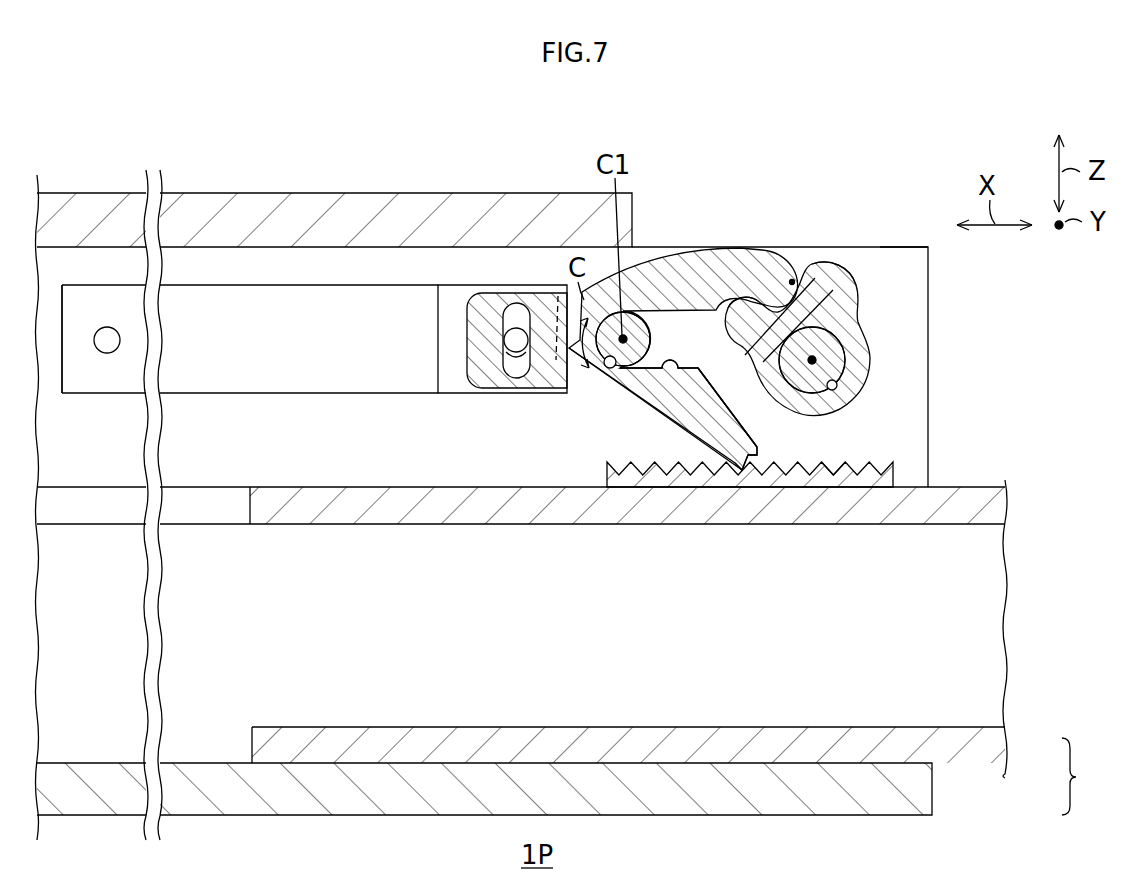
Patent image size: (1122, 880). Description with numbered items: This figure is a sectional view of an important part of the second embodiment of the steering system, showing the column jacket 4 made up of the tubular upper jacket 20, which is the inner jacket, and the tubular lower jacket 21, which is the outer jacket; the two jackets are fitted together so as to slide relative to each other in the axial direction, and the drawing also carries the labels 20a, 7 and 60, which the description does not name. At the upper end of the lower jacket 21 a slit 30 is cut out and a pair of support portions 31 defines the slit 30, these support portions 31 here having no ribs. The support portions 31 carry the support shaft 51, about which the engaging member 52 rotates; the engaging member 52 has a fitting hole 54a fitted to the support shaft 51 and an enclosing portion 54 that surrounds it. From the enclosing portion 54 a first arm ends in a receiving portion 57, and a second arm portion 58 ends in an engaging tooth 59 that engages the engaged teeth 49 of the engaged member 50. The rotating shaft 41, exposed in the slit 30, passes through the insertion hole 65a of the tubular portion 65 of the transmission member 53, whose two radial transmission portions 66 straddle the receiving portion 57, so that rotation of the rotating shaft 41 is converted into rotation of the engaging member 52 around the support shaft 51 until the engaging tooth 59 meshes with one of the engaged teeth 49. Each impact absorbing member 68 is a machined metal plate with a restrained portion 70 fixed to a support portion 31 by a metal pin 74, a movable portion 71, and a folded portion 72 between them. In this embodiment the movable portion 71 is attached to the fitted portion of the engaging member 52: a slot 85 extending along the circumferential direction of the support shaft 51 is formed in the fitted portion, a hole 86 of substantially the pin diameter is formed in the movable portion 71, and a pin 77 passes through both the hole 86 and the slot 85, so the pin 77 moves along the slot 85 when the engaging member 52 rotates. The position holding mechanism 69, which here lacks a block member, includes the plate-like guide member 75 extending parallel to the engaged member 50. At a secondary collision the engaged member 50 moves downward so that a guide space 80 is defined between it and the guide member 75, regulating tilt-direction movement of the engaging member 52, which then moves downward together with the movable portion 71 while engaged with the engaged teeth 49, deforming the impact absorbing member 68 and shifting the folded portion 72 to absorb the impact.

The column jacket 4 is at (567, 616).
The drive unit 7 is at (846, 316).
The upper jacket 20 is at (1003, 752).
The frame rail 20a is at (982, 486).
The lower jacket 21 is at (900, 800).
The slit 30 is at (808, 345).
The support portions 31 is at (900, 258).
The rotating shaft 41 is at (899, 365).
The engaged teeth 49 is at (835, 460).
The engaged member 50 is at (791, 452).
The support shaft 51 is at (648, 318).
The engaging member 52 is at (690, 375).
The transmission member 53 is at (878, 389).
The enclosing portion 54 is at (588, 350).
The fitting hole 54a is at (610, 368).
The receiving portion 57 is at (790, 282).
The second arm portion 58 is at (687, 410).
The engaging tooth 59 is at (742, 470).
The arm block 60 is at (662, 372).
The tubular portion 65 is at (846, 316).
The insertion hole 65a is at (835, 378).
The transmission portions 66 is at (828, 268).
The impact absorbing member 68 is at (240, 300).
The position holding mechanism 69 is at (334, 195).
The restrained portion 70 is at (91, 293).
The movable portion 71 is at (450, 362).
The folded portion 72 is at (556, 360).
The metal pin 74 is at (107, 353).
The guide member 75 is at (352, 207).
The pin 77 is at (512, 337).
The guide space 80 is at (493, 298).
The slot 85 is at (528, 300).
The hole 86 is at (512, 356).